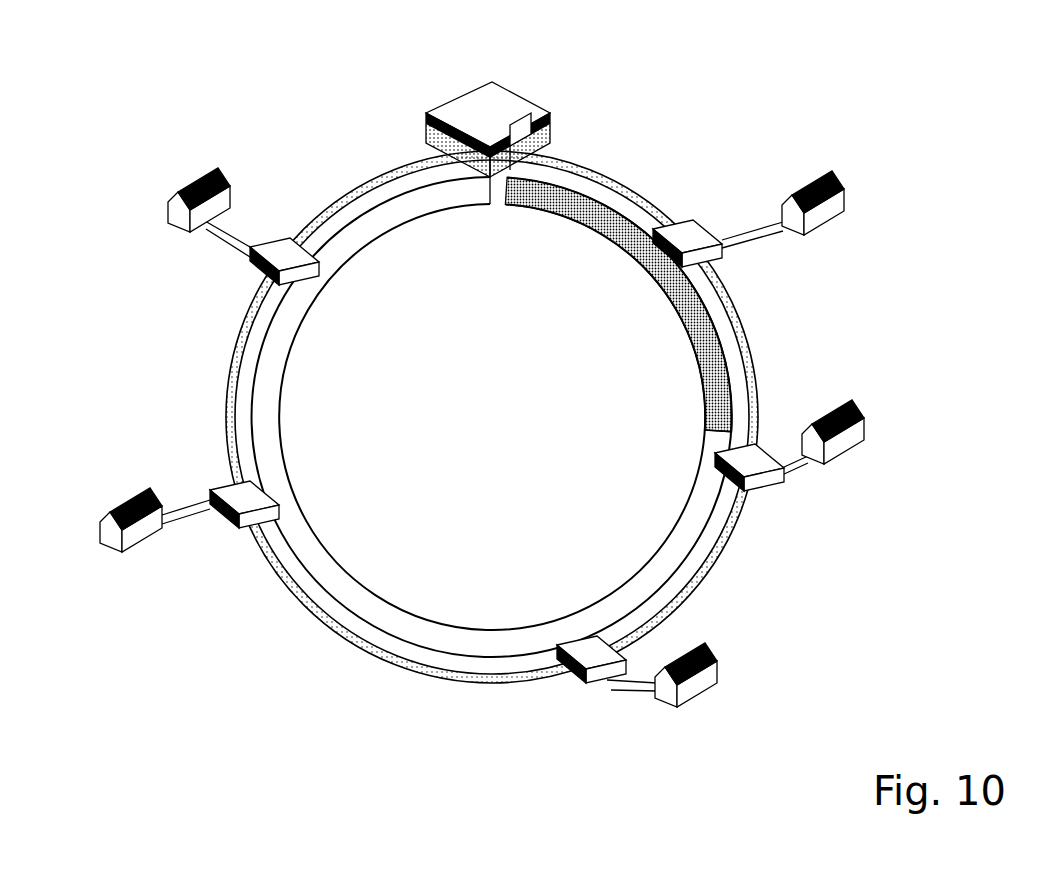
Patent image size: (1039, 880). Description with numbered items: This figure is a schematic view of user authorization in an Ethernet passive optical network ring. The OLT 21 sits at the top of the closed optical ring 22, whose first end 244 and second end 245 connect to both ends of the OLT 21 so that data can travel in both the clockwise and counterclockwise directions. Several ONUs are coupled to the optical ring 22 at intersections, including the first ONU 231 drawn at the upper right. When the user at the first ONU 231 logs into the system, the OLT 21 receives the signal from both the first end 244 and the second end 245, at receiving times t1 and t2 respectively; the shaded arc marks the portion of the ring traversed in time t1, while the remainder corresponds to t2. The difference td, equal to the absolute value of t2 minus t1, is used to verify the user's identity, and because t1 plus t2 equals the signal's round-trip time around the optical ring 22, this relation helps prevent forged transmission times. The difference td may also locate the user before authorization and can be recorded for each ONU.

The OLT 21 is at (468, 95).
The optical ring 22 is at (761, 372).
The first ONU 231 is at (849, 196).
The first end 244 is at (562, 163).
The second end 245 is at (414, 154).
The receiving time t1 is at (574, 224).
The difference td is at (708, 432).
The receiving time t2 is at (449, 653).